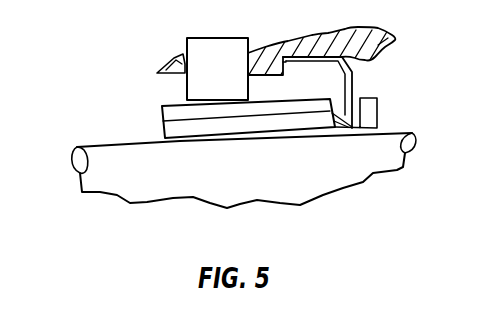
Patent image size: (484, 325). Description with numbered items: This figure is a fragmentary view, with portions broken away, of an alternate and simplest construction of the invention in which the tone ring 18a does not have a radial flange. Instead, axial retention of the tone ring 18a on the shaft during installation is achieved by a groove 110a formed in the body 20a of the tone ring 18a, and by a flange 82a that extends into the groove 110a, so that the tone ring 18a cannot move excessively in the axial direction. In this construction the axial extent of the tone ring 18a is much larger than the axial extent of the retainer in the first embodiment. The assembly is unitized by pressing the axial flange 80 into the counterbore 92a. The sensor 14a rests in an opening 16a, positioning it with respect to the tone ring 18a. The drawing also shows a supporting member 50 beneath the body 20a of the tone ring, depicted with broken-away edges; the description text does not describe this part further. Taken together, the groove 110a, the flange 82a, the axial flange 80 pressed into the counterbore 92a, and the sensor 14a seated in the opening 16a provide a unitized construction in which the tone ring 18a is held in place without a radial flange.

The sensor 14a is at (209, 46).
The opening 16a is at (181, 58).
The tone ring 18a is at (129, 100).
The body 20a is at (266, 137).
The base member 50 is at (177, 202).
The axial flange 80 is at (312, 60).
The flange 82a is at (352, 74).
The counterbore 92a is at (389, 40).
The groove 110a is at (356, 128).